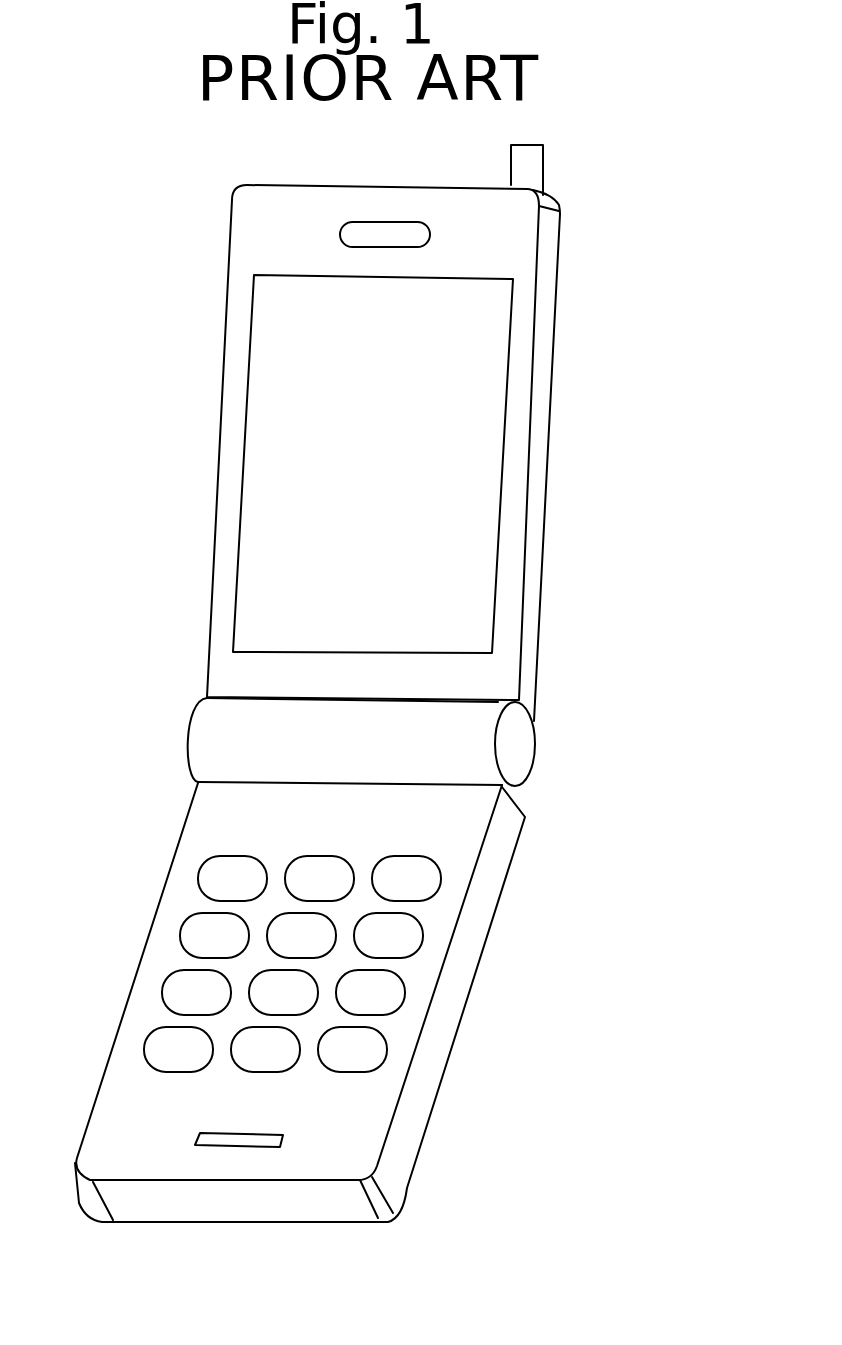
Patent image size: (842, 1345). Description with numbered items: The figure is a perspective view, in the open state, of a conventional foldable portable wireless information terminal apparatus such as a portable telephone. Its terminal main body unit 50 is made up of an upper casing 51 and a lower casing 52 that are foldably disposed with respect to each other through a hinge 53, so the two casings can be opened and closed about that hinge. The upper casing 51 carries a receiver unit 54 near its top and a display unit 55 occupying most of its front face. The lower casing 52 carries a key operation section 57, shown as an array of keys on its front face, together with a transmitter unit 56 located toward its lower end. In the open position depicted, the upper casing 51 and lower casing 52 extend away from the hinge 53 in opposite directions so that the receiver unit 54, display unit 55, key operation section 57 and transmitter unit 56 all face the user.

The terminal main body unit 50 is at (176, 609).
The upper casing 51 is at (558, 262).
The lower casing 52 is at (453, 1038).
The hinge 53 is at (510, 747).
The receiver unit 54 is at (387, 227).
The display unit 55 is at (470, 478).
The transmitter unit 56 is at (245, 1138).
The key operation section 57 is at (422, 873).